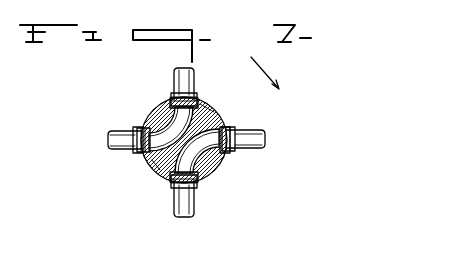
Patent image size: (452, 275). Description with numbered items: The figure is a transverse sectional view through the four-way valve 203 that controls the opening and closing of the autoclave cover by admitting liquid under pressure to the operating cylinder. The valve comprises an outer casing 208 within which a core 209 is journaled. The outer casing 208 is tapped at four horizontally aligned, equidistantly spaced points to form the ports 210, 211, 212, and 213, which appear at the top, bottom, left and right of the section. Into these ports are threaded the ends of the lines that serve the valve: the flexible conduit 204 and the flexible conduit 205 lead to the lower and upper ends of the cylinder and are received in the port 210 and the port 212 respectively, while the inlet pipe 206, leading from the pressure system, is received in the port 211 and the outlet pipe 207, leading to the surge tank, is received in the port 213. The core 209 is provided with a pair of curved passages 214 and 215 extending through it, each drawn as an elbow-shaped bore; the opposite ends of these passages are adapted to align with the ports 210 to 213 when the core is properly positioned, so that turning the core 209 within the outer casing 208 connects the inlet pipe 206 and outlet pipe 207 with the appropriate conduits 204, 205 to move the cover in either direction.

The four-way valve 203 is at (230, 95).
The flexible conduit 204 is at (195, 202).
The flexible conduit 205 is at (178, 88).
The inlet pipe 206 is at (262, 131).
The outlet pipe 207 is at (130, 133).
The outer casing 208 is at (216, 108).
The core 209 is at (211, 170).
The port 210 is at (171, 181).
The port 211 is at (223, 123).
The port 212 is at (194, 104).
The port 213 is at (151, 161).
The curved passage 214 is at (224, 151).
The curved passage 215 is at (152, 114).